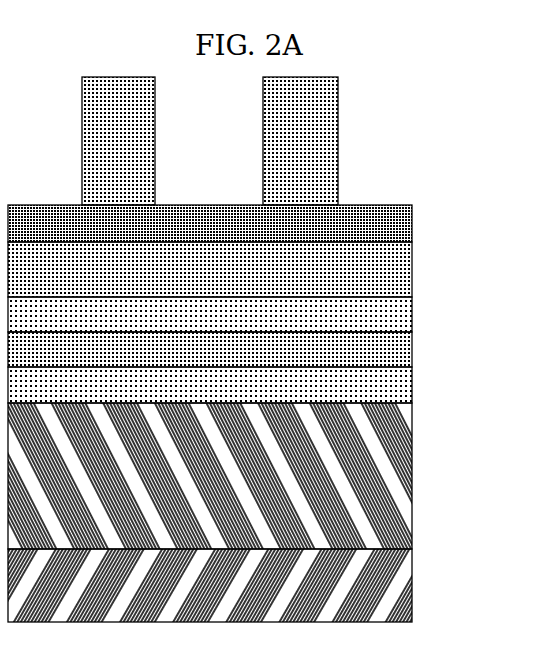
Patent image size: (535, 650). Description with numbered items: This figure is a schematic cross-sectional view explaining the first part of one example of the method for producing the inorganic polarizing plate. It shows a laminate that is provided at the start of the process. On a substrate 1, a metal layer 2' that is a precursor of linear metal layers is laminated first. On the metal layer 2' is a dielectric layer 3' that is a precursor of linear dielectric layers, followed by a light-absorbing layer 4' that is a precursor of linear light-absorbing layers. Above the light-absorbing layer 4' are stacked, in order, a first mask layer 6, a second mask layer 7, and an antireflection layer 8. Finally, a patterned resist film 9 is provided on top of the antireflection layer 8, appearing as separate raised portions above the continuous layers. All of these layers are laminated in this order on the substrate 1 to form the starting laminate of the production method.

The substrate 1 is at (385, 585).
The metal layer 2' is at (257, 476).
The dielectric layer 3' is at (257, 385).
The light-absorbing layer 4' is at (257, 347).
The first mask layer 6 is at (378, 309).
The second mask layer 7 is at (412, 265).
The antireflection layer 8 is at (412, 222).
The patterned resist film 9 is at (318, 162).